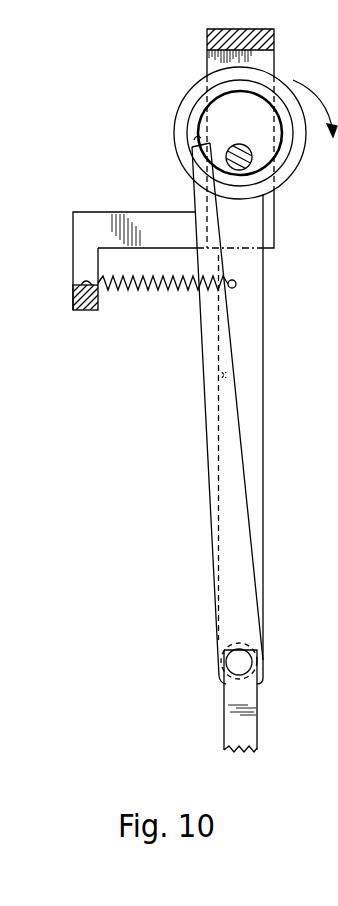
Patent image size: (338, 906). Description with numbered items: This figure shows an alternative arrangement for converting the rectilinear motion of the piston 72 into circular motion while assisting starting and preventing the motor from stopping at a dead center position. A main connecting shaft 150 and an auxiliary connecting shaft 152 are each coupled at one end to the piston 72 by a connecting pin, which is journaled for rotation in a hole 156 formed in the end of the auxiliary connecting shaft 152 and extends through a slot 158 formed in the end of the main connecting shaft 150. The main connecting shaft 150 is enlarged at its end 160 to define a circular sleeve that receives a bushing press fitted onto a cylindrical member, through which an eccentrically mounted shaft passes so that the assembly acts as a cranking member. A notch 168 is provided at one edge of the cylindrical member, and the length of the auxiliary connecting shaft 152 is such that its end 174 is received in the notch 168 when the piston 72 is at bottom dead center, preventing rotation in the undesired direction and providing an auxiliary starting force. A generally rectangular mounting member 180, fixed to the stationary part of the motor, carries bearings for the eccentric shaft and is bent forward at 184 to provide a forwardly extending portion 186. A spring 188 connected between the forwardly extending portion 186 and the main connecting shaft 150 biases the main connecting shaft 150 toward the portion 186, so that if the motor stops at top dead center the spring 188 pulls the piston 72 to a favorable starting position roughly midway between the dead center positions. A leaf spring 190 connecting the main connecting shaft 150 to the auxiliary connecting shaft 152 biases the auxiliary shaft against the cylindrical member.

The piston 72 is at (224, 718).
The main connecting shaft 150 is at (263, 442).
The auxiliary connecting shaft 152 is at (207, 437).
The hole 156 is at (226, 678).
The slot 158 is at (220, 630).
The enlarged end 160 is at (193, 82).
The notch 168 is at (197, 137).
The end of auxiliary connecting shaft 174 is at (193, 147).
The mounting member 180 is at (207, 33).
The bend 184 is at (152, 212).
The forwardly extending portion 186 is at (78, 313).
The spring 188 is at (152, 295).
The leaf spring 190 is at (226, 380).